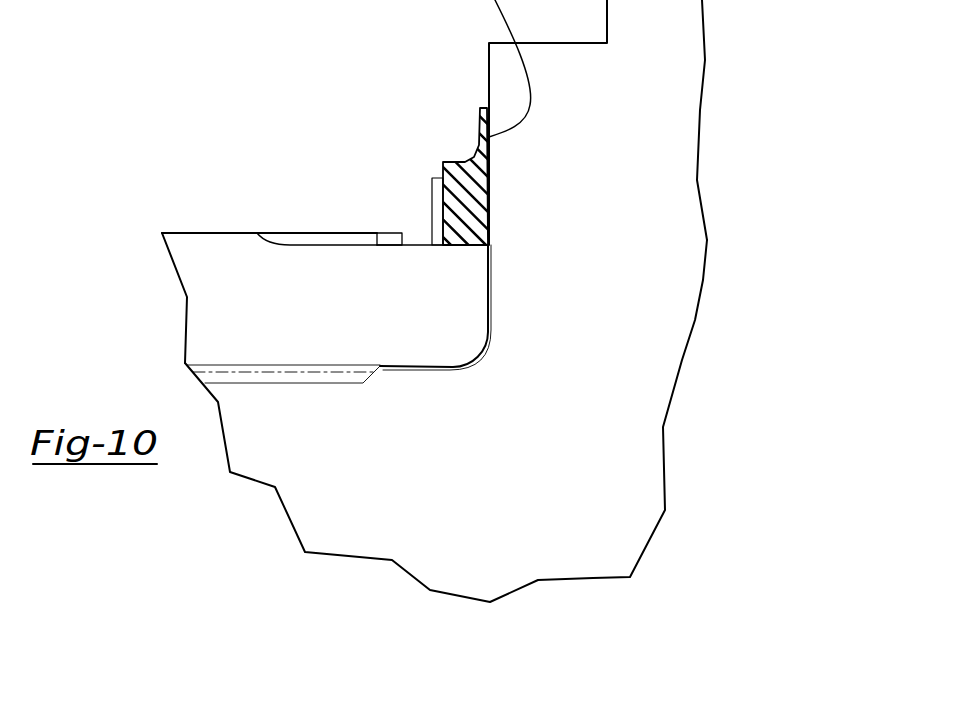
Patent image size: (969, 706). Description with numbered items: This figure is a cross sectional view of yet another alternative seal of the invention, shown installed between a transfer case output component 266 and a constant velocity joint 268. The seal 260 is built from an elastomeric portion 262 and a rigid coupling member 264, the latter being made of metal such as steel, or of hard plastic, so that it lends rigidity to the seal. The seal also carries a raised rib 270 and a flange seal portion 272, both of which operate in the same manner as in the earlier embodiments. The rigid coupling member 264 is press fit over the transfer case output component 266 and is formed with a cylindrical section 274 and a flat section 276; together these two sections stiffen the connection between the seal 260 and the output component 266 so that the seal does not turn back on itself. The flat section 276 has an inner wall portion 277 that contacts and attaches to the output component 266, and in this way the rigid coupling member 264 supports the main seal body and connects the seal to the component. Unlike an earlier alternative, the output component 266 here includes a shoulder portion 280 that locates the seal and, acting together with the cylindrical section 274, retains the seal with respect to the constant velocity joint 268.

The seal 260 is at (463, 173).
The elastomeric portion 262 is at (412, 245).
The rigid coupling member 264 is at (436, 207).
The transfer case output component 266 is at (237, 270).
The constant velocity joint 268 is at (657, 113).
The raised rib 270 is at (490, 222).
The flange seal portion 272 is at (472, 166).
The cylindrical section 274 is at (388, 233).
The flat section 276 is at (432, 180).
The inner wall portion 277 is at (433, 230).
The shoulder portion 280 is at (257, 233).